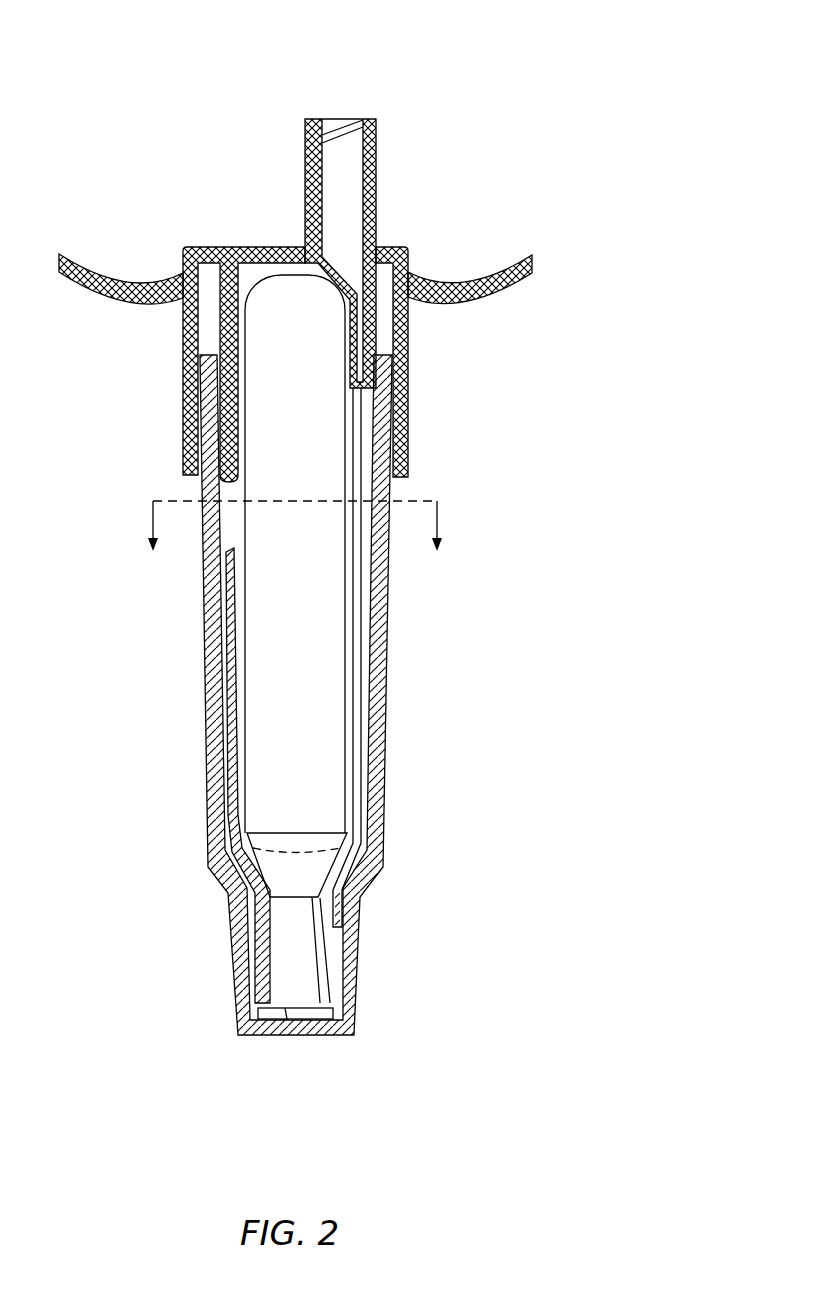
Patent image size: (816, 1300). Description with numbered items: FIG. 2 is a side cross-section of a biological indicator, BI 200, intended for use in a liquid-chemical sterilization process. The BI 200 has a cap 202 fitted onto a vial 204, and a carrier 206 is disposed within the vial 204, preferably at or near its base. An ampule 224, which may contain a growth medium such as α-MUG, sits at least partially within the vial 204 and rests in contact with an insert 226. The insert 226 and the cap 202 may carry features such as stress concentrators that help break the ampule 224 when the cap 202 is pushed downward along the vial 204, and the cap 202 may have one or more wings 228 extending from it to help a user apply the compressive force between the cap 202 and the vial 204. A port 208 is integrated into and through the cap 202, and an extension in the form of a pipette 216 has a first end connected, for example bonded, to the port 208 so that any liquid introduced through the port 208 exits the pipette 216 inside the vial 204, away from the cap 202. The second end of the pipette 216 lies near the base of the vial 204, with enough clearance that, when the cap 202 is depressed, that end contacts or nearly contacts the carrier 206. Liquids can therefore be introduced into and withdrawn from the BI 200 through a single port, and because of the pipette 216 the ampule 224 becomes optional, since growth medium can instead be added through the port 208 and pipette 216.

The BI 200 is at (406, 36).
The cap 202 is at (203, 247).
The vial 204 is at (207, 718).
The carrier 206 is at (285, 1016).
The port 208 is at (377, 168).
The pipette 216 is at (357, 633).
The ampule 224 is at (337, 680).
The insert 226 is at (307, 870).
The wings 228 is at (95, 272).